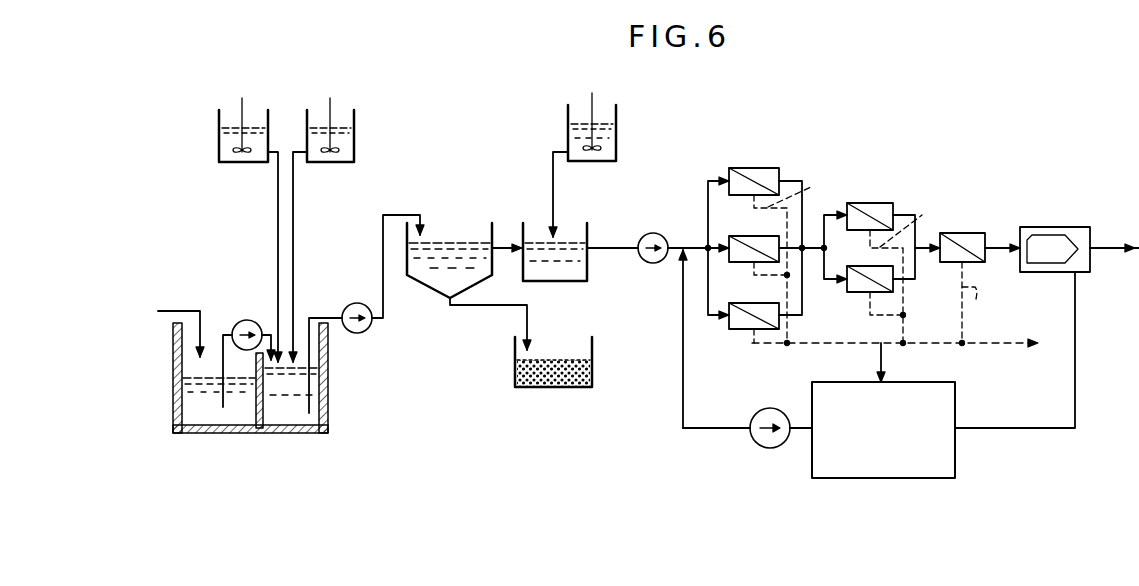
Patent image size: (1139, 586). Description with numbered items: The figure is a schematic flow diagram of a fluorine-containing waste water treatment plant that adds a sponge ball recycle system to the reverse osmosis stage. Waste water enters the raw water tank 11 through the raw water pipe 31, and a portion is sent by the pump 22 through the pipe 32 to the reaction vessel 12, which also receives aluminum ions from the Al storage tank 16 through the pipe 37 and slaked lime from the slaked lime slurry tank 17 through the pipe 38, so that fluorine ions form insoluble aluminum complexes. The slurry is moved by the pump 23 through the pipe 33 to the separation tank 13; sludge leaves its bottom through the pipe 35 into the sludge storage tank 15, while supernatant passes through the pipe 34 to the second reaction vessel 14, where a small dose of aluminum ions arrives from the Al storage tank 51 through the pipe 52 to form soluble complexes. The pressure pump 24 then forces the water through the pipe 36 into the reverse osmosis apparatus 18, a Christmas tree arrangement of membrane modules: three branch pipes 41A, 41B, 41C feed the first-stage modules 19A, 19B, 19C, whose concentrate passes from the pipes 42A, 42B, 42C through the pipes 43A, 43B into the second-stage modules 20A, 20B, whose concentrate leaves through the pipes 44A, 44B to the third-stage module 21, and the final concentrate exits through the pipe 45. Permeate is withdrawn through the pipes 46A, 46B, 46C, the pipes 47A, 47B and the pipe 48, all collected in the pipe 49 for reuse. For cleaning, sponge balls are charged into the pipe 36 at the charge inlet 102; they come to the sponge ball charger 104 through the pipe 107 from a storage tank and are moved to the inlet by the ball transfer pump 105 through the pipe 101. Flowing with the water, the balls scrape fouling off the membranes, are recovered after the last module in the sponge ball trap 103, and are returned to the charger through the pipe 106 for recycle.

The raw water tank 11 is at (216, 422).
The reaction vessel 12 is at (296, 420).
The separation tank 13 is at (440, 280).
The second reaction vessel 14 is at (572, 276).
The sludge storage tank 15 is at (558, 380).
The Al storage tank 16 is at (354, 139).
The slaked lime slurry tank 17 is at (222, 140).
The reverse osmosis apparatus 18 is at (912, 127).
The reverse osmosis module 19A is at (775, 167).
The reverse osmosis module 19B is at (730, 252).
The reverse osmosis module 19C is at (738, 330).
The reverse osmosis module 20A is at (887, 200).
The reverse osmosis module 20B is at (859, 262).
The reverse osmosis module 21 is at (970, 230).
The pump 22 is at (258, 316).
The pump 23 is at (357, 302).
The pressure pump 24 is at (656, 232).
The raw water pipe 31 is at (190, 310).
The pipe 32 is at (220, 330).
The pipe 33 is at (383, 325).
The pipe 34 is at (504, 240).
The pipe 35 is at (501, 305).
The pipe 36 is at (612, 246).
The pipe 37 is at (296, 212).
The pipe 38 is at (277, 217).
The branch pipe 41A is at (710, 168).
The branch pipe 41B is at (716, 240).
The branch pipe 41C is at (710, 319).
The pipe 42A is at (802, 182).
The pipe 42B is at (800, 240).
The pipe 42C is at (808, 325).
The pipe 43A is at (854, 206).
The pipe 43B is at (835, 282).
The pipe 44A is at (910, 212).
The pipe 44B is at (910, 280).
The pipe 45 is at (1003, 246).
The pipe 46A is at (808, 256).
The pipe 46B is at (774, 275).
The pipe 46C is at (784, 343).
The pipe 47A is at (920, 268).
The pipe 47B is at (880, 315).
The pipe 48 is at (980, 304).
The pipe 49 is at (973, 344).
The Al storage tank 51 is at (614, 140).
The pipe 52 is at (548, 186).
The pipe 101 is at (705, 428).
The charge inlet 102 is at (683, 234).
The sponge ball trap 103 is at (1078, 226).
The sponge ball charger 104 is at (958, 428).
The ball transfer pump 105 is at (770, 448).
The pipe 106 is at (1045, 428).
The pipe 107 is at (886, 356).